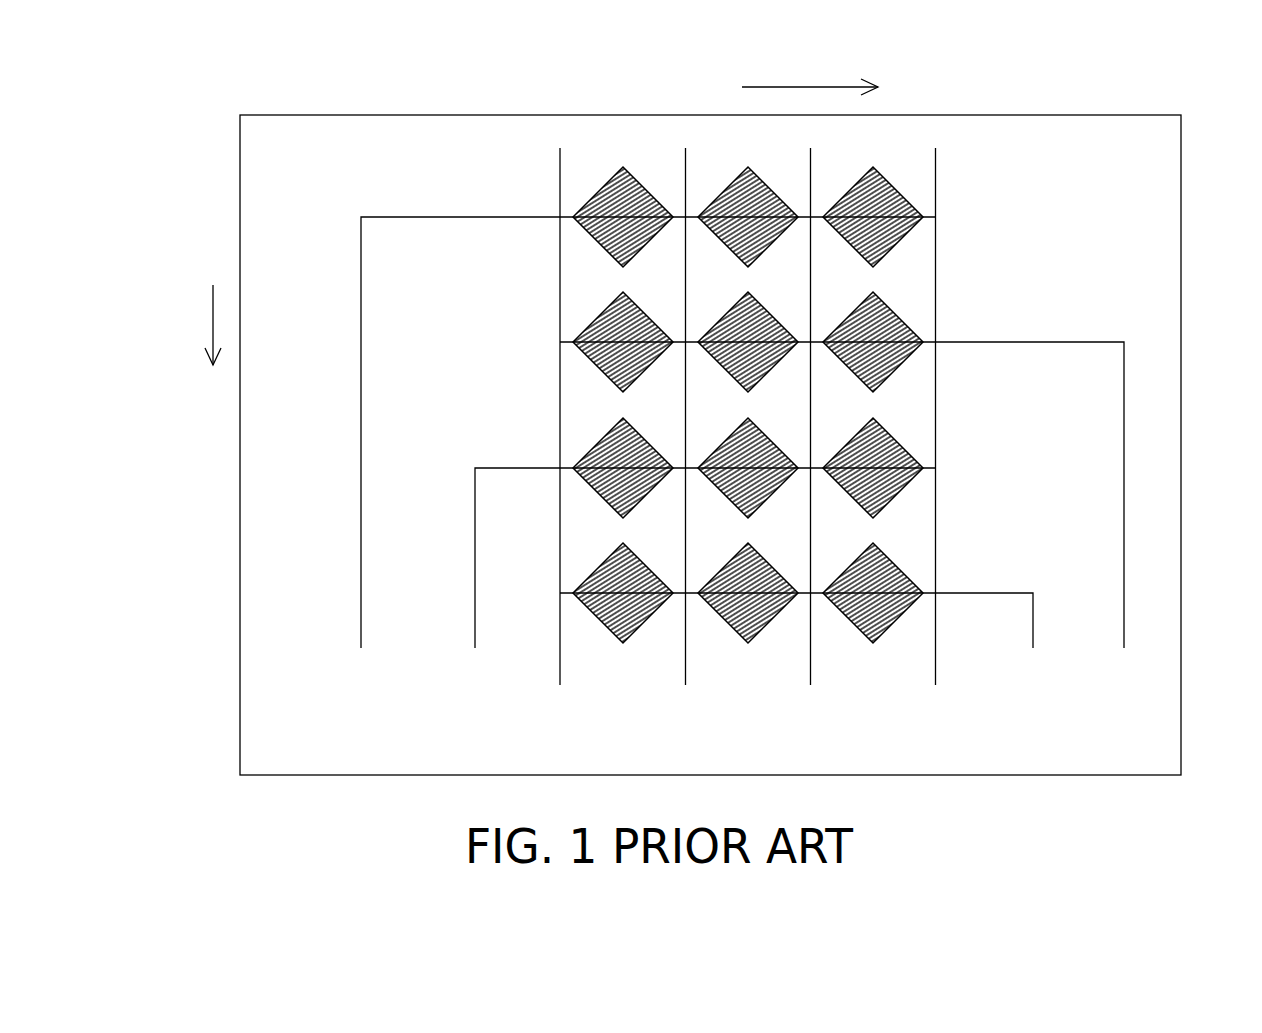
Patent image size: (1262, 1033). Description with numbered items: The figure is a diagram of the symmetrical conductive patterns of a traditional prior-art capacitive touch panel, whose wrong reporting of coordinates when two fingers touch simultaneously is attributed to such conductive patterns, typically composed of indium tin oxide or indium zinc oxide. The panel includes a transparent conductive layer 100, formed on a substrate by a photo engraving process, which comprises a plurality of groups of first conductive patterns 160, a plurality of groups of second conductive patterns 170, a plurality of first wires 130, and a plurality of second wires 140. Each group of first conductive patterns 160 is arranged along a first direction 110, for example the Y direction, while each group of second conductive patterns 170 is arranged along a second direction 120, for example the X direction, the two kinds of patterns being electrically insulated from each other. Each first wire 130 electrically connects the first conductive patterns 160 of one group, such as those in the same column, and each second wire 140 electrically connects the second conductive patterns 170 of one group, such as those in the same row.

The transparent conductive layer 100 is at (1181, 197).
The first direction 110 is at (213, 312).
The second direction 120 is at (806, 87).
The first wires 130 is at (560, 685).
The second wires 140 is at (361, 648).
The first conductive patterns 160 is at (833, 295).
The second conductive patterns 170 is at (910, 237).